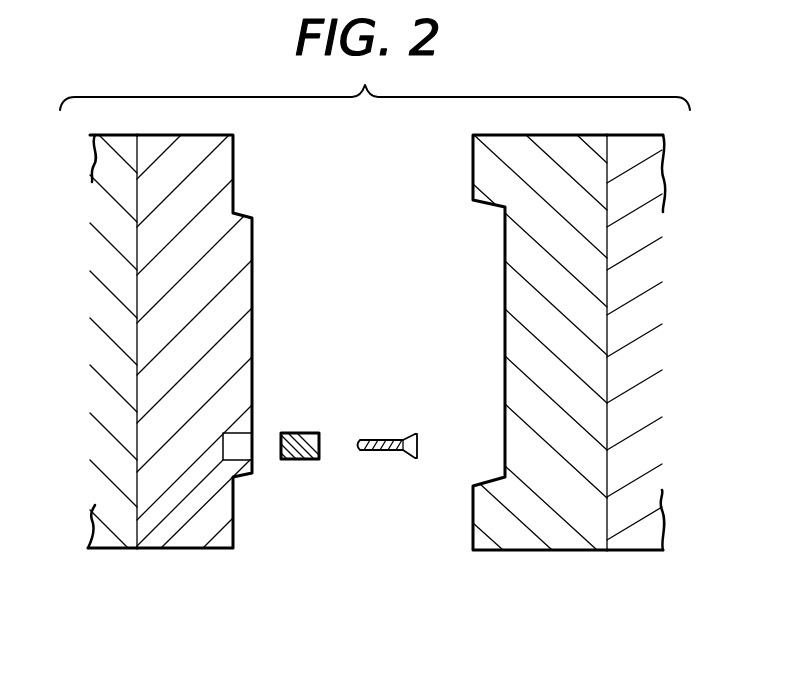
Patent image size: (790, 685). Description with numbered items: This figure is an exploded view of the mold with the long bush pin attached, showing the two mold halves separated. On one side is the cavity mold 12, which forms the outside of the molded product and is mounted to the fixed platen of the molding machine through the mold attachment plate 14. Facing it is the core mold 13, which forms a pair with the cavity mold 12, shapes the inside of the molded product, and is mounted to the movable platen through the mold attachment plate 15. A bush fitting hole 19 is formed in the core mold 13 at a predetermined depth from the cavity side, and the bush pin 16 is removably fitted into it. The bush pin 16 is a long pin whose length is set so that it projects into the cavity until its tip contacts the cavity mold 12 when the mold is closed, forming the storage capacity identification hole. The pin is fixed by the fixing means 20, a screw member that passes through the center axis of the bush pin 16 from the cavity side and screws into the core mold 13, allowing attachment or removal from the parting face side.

The cavity mold 12 is at (523, 540).
The core mold 13 is at (197, 527).
The mold attachment plate (fixed side attachment plate) 14 is at (638, 537).
The mold attachment plate (moveable side attachment plate) 15 is at (113, 515).
The bush pin 16 is at (303, 433).
The bush fitting hole 19 is at (243, 450).
The fixing means 20 is at (385, 452).